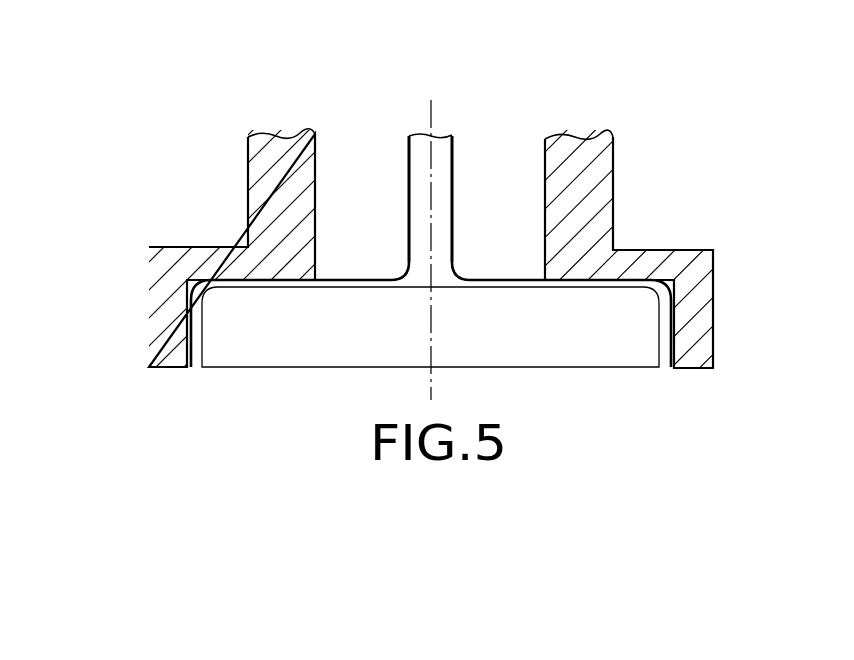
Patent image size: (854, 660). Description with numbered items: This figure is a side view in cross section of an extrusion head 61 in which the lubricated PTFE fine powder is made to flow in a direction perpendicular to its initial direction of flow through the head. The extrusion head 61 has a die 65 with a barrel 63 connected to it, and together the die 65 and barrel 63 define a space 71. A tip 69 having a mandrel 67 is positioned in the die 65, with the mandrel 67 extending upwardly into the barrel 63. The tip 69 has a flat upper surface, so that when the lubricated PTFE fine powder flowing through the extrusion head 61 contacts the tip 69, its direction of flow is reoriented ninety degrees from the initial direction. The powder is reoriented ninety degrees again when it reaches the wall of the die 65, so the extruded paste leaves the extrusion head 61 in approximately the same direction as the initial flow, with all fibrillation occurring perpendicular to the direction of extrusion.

The extrusion head 61 is at (174, 62).
The barrel 63 is at (273, 172).
The die 65 is at (150, 284).
The mandrel 67 is at (453, 178).
The tip 69 is at (371, 341).
The space 71 is at (197, 348).